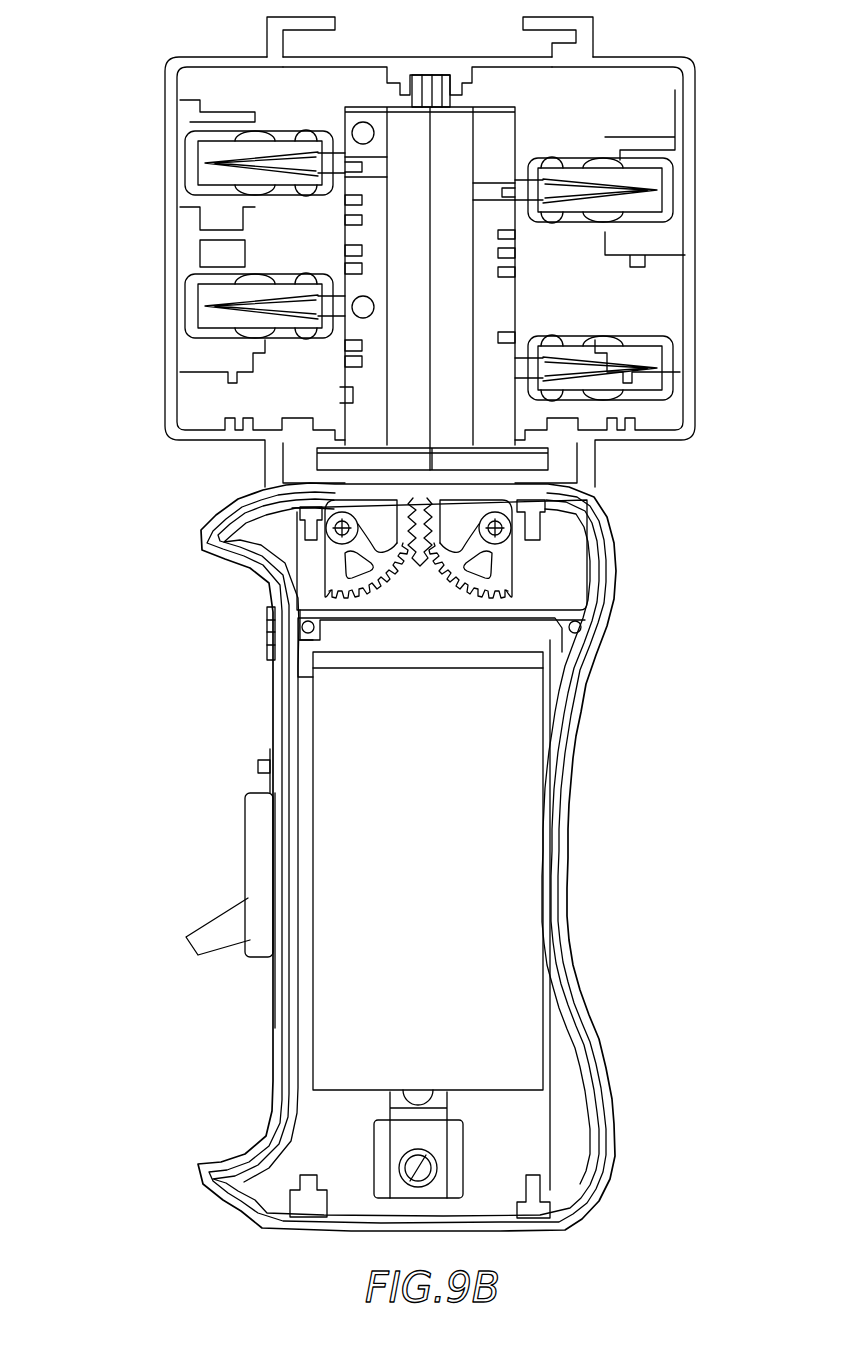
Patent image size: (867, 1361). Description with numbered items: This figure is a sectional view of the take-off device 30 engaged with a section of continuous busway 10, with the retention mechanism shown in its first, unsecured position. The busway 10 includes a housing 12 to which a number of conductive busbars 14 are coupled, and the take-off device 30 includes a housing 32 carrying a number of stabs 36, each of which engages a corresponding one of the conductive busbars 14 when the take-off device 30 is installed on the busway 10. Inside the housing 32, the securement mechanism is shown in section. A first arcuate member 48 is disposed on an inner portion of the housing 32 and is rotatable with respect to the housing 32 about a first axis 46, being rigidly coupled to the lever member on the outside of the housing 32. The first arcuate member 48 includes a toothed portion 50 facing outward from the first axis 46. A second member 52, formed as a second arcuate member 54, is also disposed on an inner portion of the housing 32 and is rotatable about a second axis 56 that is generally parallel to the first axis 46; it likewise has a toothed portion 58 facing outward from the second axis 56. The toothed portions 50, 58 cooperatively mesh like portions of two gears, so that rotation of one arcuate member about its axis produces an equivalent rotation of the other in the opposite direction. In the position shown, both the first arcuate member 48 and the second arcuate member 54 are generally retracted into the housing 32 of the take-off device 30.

The busway 10 is at (396, 252).
The housing 12 is at (698, 238).
The conductive busbars 14 is at (265, 183).
The stabs 36 is at (303, 163).
The take-off device 30 is at (441, 857).
The housing 32 is at (583, 985).
The first axis 46 is at (308, 548).
The first arcuate member 48 is at (338, 568).
The toothed portion 50 is at (397, 612).
The second member 52 is at (590, 563).
The second arcuate member 54 is at (512, 578).
The second axis 56 is at (512, 540).
The toothed portion 58 is at (439, 614).